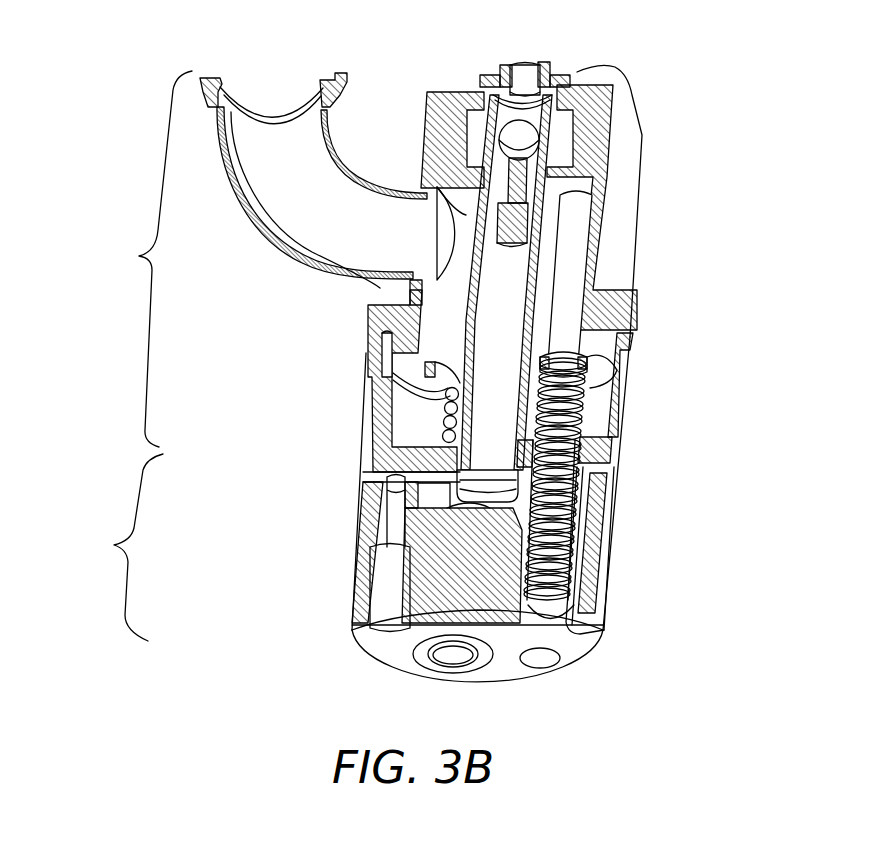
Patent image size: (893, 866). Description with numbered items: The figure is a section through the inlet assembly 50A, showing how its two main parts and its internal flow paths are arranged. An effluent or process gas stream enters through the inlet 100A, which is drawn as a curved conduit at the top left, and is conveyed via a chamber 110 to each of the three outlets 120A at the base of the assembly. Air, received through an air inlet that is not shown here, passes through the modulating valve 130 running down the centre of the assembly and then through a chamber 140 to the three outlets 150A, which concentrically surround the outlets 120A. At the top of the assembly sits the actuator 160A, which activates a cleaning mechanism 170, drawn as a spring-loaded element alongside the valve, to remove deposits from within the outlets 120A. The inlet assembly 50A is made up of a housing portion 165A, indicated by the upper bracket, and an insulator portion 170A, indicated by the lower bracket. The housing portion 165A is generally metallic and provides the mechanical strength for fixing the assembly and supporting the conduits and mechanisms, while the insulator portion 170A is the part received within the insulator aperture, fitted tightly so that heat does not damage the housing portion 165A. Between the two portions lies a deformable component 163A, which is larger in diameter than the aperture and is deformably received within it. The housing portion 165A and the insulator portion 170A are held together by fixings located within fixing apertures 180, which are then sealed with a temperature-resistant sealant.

The inlet assembly 50A is at (696, 120).
The inlet 100A is at (277, 100).
The chamber 110 is at (407, 413).
The outlets 120A is at (453, 657).
The air modulating valve 130 is at (519, 224).
The chamber 140 is at (433, 498).
The outlets 150A is at (420, 652).
The actuator 160A is at (622, 74).
The deformable component 163A is at (367, 480).
The housing portion 165A is at (136, 259).
The cleaning mechanism 170 is at (577, 517).
The insulator portion 170A is at (110, 547).
The fixing apertures 180 is at (377, 590).